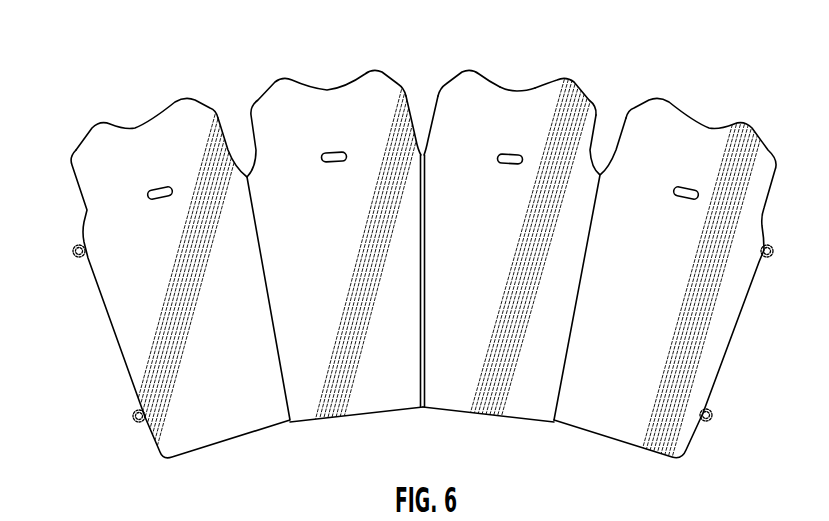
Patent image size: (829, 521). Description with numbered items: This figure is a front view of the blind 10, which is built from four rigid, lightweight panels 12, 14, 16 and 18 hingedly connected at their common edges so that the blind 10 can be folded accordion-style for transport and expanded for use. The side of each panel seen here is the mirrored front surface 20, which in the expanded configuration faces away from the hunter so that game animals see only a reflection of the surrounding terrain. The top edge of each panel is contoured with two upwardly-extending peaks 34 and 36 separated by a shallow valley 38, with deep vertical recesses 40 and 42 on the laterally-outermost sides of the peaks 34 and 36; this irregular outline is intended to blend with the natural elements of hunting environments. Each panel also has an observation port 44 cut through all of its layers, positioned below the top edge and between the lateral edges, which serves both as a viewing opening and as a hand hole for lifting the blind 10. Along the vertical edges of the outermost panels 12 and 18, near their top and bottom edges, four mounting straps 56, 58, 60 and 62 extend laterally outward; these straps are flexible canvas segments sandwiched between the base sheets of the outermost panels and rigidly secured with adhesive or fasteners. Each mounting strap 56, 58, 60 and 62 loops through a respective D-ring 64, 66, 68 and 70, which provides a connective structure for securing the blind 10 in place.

The blind 10 is at (722, 85).
The panel 12 is at (208, 425).
The panel 14 is at (338, 398).
The panel 16 is at (527, 403).
The panel 18 is at (613, 417).
The mirrored front surface 20 is at (133, 147).
The peak 34 is at (473, 70).
The peak 36 is at (568, 80).
The shallow valley 38 is at (520, 90).
The deep vertical recess 40 is at (435, 145).
The deep vertical recess 42 is at (590, 163).
The observation port 44 is at (328, 152).
The mounting strap 56 is at (78, 256).
The mounting strap 58 is at (139, 419).
The mounting strap 60 is at (768, 257).
The mounting strap 62 is at (707, 420).
The D-ring 64 is at (74, 247).
The D-ring 66 is at (133, 412).
The D-ring 68 is at (771, 247).
The D-ring 70 is at (712, 412).